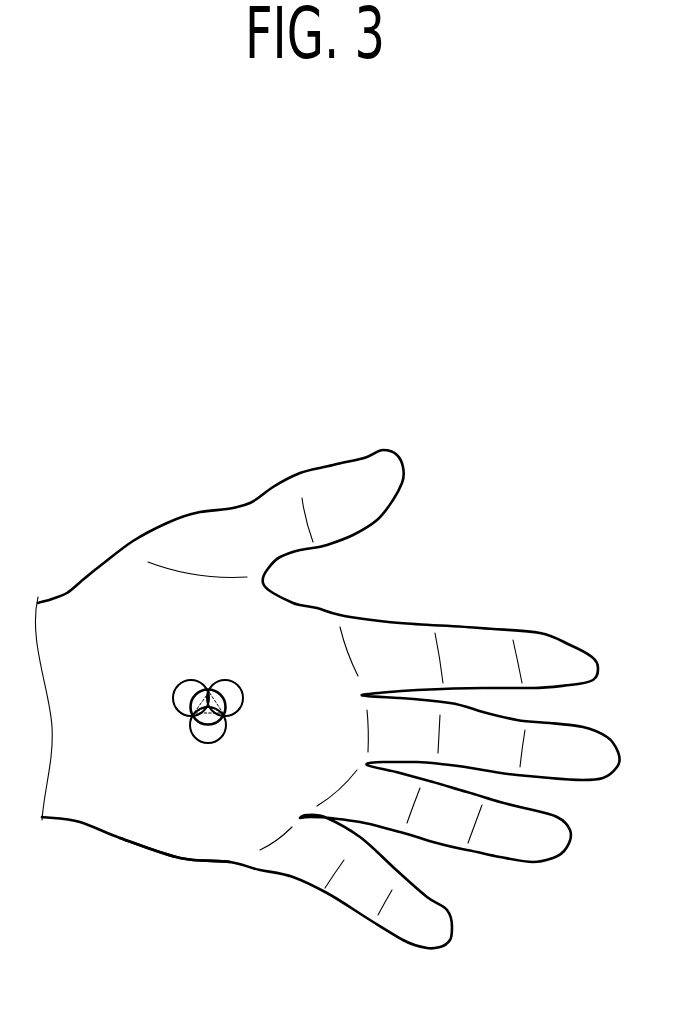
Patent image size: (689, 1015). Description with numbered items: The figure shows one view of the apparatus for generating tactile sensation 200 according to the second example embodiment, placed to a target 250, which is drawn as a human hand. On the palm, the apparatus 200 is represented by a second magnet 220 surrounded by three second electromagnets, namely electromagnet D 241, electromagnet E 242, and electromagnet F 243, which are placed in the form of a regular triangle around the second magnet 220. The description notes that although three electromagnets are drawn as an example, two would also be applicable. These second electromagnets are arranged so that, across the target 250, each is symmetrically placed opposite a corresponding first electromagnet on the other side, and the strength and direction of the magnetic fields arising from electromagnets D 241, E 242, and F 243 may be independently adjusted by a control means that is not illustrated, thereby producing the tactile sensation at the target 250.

The apparatus for generating tactile sensation 200 is at (78, 420).
The second magnet 220 is at (228, 713).
The electromagnet D 241 is at (193, 735).
The electromagnet E 242 is at (182, 682).
The electromagnet F 243 is at (242, 708).
The target 250 is at (180, 858).